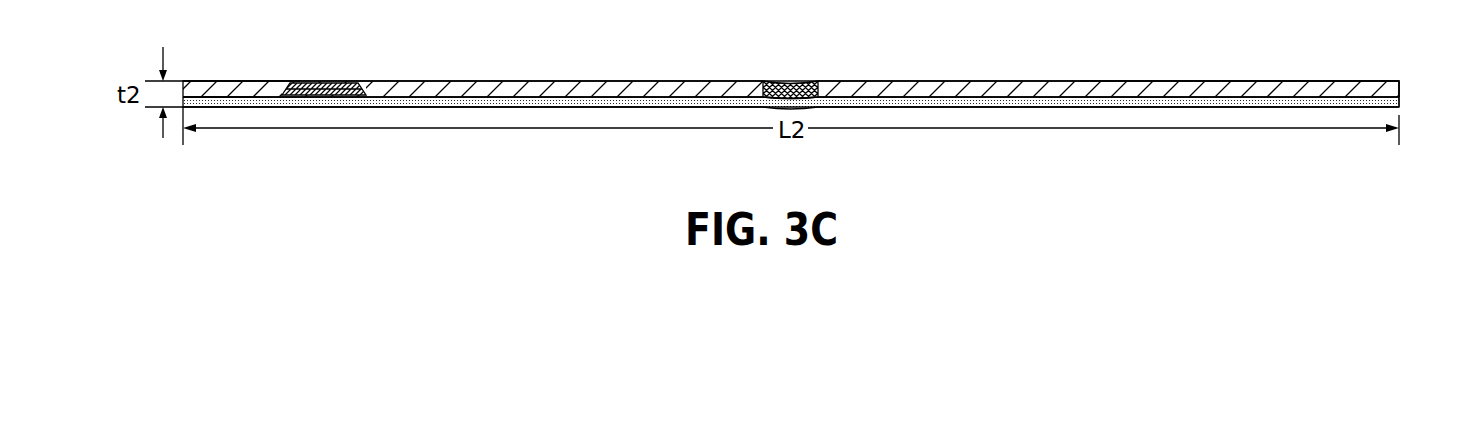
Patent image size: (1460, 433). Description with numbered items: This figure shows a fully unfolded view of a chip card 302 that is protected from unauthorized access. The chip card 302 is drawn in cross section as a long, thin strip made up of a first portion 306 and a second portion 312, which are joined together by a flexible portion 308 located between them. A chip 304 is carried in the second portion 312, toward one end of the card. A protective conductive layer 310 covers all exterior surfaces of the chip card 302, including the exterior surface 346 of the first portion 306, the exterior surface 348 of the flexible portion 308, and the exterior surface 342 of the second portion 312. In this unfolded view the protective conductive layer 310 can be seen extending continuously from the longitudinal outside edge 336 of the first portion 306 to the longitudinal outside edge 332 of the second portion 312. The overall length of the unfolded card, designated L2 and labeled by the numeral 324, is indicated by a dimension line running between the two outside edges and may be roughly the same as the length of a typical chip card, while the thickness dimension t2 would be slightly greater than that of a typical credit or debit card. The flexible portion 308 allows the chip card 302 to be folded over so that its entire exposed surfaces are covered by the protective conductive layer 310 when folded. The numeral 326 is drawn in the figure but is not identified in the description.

The chip card 302 is at (1396, 56).
The chip 304 is at (327, 88).
The first portion 306 is at (1095, 91).
The flexible portion 308 is at (792, 92).
The protective conductive layer 310 is at (938, 101).
The second portion 312 is at (477, 90).
The length L2 324 is at (790, 143).
The top surface 326 is at (133, 73).
The longitudinal outside edge of second portion 332 is at (180, 98).
The longitudinal outside edge of first portion 336 is at (1399, 97).
The exterior surface of second portion 342 is at (423, 98).
The exterior surface of first portion 346 is at (1063, 98).
The exterior surface of flexible portion 348 is at (775, 102).